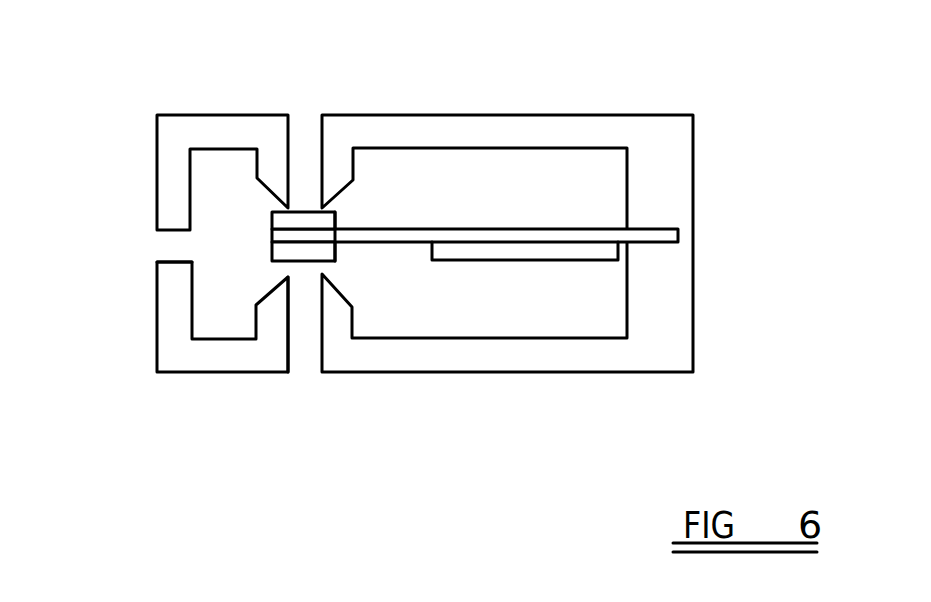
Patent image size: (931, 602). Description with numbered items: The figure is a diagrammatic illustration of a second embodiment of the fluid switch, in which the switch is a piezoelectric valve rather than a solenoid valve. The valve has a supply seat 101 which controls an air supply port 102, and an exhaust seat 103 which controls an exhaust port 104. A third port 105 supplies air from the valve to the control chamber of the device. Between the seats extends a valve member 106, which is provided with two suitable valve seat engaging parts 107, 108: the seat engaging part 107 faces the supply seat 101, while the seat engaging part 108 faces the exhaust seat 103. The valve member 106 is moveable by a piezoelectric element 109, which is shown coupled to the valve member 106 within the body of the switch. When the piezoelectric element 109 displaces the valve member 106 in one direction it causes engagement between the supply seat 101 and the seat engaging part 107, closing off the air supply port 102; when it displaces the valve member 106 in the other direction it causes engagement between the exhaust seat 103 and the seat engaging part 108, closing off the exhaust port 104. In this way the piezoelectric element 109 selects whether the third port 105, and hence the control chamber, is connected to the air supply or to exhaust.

The supply seat 101 is at (323, 208).
The air supply port 102 is at (293, 150).
The exhaust seat 103 is at (287, 275).
The exhaust port 104 is at (322, 352).
The third port 105 is at (173, 259).
The valve member 106 is at (410, 235).
The valve seat engaging part 107 is at (335, 220).
The valve seat engaging part 108 is at (337, 253).
The piezoelectric element 109 is at (580, 253).